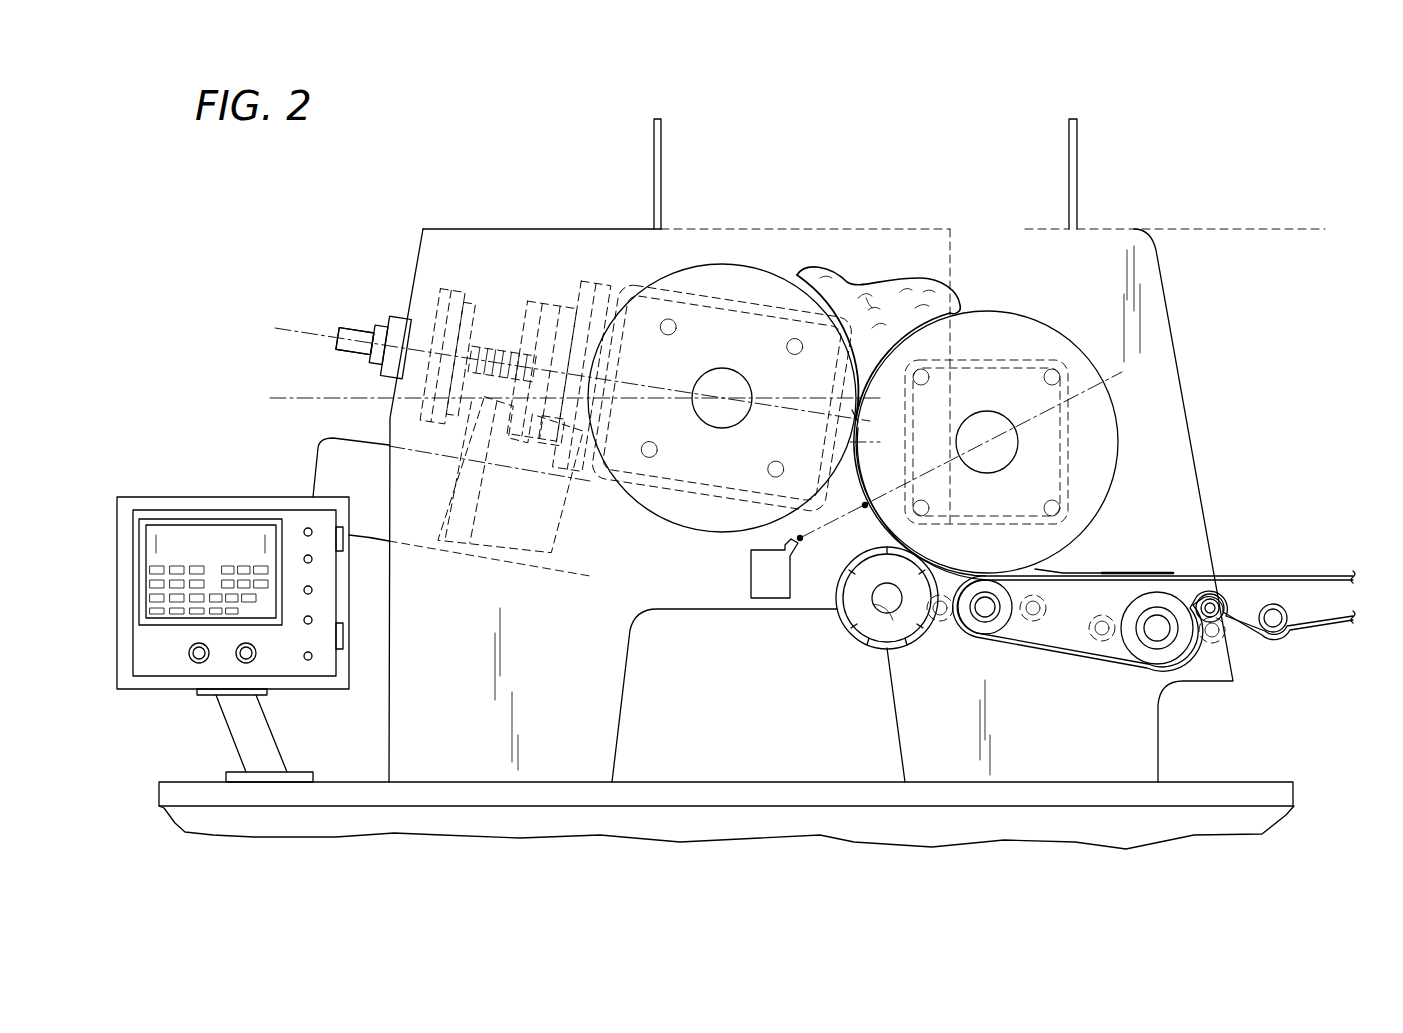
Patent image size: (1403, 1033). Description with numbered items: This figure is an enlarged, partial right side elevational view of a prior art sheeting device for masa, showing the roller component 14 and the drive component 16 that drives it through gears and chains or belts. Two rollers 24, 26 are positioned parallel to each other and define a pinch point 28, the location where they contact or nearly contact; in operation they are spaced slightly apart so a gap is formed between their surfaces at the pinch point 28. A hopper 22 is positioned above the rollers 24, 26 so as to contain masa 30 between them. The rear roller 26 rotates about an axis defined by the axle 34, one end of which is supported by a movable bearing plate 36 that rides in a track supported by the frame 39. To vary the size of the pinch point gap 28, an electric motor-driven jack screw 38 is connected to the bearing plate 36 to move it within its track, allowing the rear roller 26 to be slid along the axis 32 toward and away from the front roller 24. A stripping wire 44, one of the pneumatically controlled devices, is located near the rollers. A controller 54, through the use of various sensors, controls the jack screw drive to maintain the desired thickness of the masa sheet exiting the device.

The roller component 14 is at (736, 469).
The drive component 16 is at (742, 484).
The hopper 22 is at (1094, 159).
The roller 24 is at (936, 433).
The rear roller 26 is at (722, 353).
The pinch point 28 is at (791, 442).
The masa 30 is at (1076, 377).
The axis 32 is at (554, 403).
The axle 34 is at (704, 382).
The movable bearing plate 36 is at (721, 343).
The jack screw 38 is at (636, 468).
The frame 39 is at (1190, 298).
The stripping wire 44 is at (1141, 603).
The controller 54 is at (233, 639).